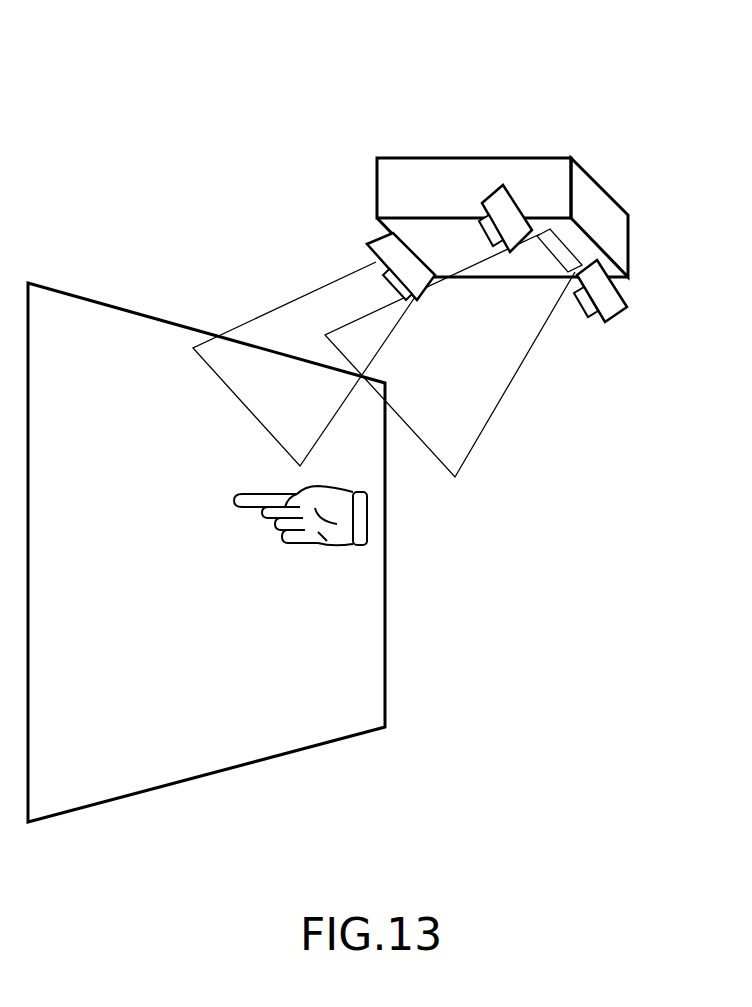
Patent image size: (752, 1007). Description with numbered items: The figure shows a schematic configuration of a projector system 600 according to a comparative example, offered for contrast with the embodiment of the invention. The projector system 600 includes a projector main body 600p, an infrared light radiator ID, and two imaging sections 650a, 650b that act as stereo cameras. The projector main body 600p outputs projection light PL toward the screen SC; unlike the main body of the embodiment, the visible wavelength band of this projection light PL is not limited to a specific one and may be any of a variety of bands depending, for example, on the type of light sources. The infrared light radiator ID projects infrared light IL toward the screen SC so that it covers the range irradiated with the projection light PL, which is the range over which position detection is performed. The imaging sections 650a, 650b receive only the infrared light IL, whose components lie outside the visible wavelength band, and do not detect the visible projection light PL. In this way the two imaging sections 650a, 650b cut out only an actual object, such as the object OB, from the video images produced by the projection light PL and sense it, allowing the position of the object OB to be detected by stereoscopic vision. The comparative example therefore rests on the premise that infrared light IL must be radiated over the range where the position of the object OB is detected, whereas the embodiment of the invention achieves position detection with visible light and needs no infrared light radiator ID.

The projector system 600 is at (525, 168).
The projector main body 600p is at (542, 173).
The imaging section 650a is at (627, 293).
The imaging section 650b is at (508, 212).
The infrared light radiator ID is at (375, 240).
The infrared light IL is at (320, 318).
The projection light PL is at (500, 387).
The screen SC is at (128, 327).
The object OB is at (333, 546).